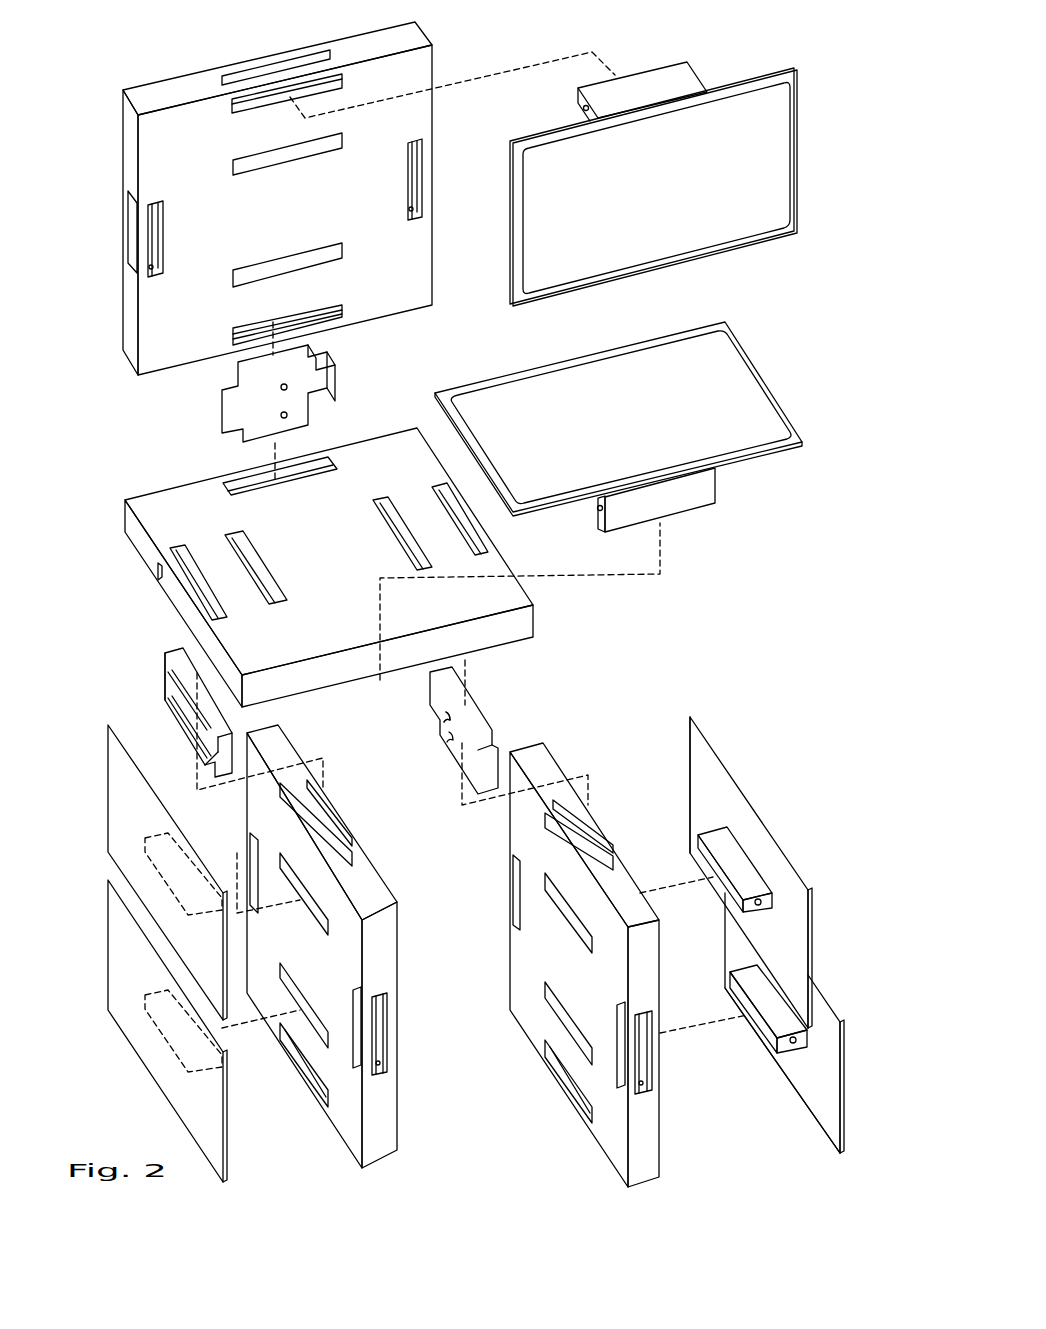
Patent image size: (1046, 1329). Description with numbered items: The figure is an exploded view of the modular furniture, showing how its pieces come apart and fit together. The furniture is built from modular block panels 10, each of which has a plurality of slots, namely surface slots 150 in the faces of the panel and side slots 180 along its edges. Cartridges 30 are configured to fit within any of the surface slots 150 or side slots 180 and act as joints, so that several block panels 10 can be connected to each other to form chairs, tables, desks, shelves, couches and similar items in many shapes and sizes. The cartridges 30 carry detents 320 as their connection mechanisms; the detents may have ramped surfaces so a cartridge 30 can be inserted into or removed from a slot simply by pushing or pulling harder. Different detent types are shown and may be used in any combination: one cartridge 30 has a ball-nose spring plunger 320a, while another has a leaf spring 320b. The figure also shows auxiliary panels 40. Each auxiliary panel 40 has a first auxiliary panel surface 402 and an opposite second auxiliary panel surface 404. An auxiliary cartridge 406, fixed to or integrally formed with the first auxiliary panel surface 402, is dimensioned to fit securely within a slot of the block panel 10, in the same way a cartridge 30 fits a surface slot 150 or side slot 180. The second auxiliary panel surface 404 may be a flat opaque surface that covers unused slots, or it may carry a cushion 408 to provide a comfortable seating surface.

The modular block panel 10 is at (420, 250).
The cartridge 30 is at (330, 402).
The auxiliary panel 40 is at (775, 72).
The surface slot 150 is at (424, 148).
The side slot 180 is at (247, 68).
The detent 320 is at (175, 716).
The ball-nose spring plunger 320a is at (280, 415).
The leaf spring 320b is at (442, 740).
The first auxiliary panel surface 402 is at (698, 759).
The second auxiliary panel surface 404 is at (822, 903).
The auxiliary cartridge 406 is at (663, 80).
The cushion 408 is at (535, 200).